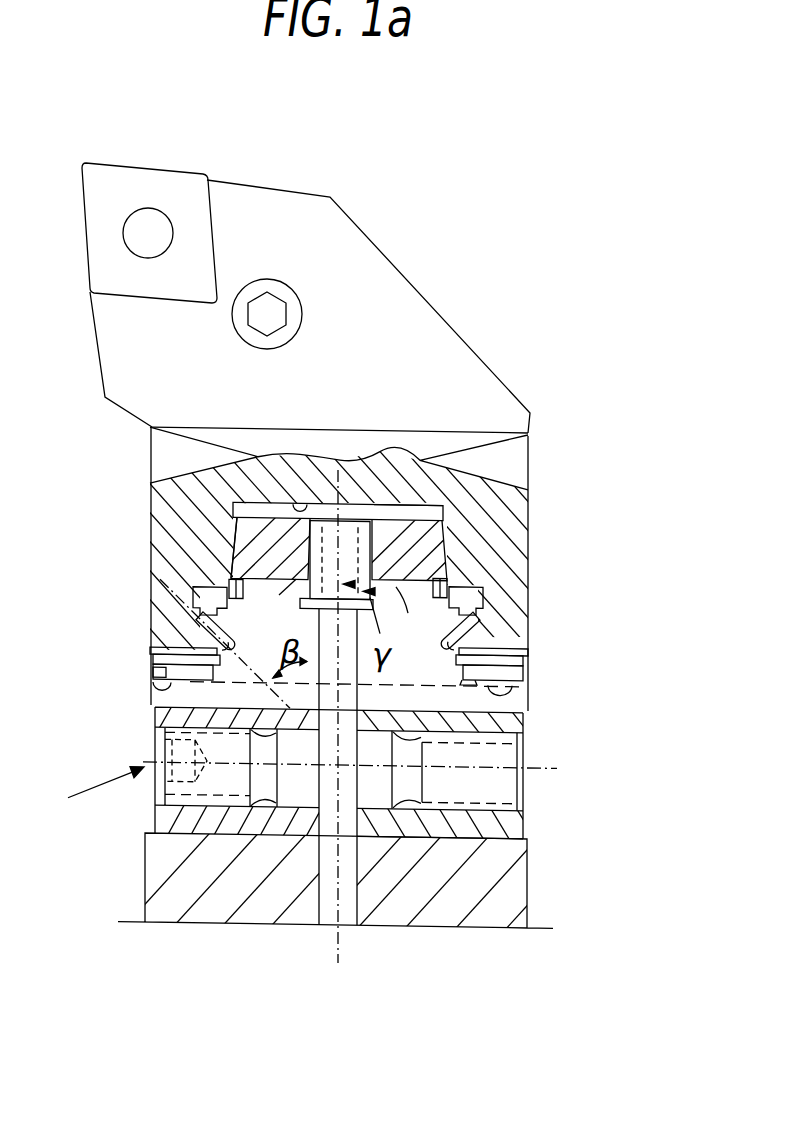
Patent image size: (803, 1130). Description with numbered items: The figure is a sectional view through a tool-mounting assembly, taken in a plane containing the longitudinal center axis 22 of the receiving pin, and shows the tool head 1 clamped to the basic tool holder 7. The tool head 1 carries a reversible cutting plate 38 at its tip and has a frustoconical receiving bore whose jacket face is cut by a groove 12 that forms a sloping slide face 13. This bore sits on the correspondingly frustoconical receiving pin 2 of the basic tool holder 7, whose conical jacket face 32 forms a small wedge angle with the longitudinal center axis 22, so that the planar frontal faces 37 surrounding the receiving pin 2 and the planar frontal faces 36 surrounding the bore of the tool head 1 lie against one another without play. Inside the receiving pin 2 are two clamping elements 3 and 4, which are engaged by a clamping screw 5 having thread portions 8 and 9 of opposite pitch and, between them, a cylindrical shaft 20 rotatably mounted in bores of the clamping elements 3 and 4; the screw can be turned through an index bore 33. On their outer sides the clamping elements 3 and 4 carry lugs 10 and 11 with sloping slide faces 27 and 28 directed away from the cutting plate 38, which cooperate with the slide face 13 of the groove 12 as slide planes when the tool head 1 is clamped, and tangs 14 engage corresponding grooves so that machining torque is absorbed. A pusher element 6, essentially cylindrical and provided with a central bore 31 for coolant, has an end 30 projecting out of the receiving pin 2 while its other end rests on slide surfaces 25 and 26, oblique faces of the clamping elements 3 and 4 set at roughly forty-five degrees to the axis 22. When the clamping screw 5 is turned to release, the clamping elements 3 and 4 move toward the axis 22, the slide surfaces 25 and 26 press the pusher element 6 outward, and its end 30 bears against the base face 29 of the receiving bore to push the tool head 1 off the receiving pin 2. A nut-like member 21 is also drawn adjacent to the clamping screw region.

The tool head 1 is at (362, 250).
The receiving pin 2 is at (430, 553).
The clamping element 3 is at (225, 643).
The clamping element 4 is at (430, 670).
The clamping screw 5 is at (94, 796).
The pusher element 6 is at (395, 527).
The basic tool holder 7 is at (158, 874).
The thread portion 8 is at (153, 829).
The thread portion 9 is at (493, 782).
The lug 10 is at (205, 605).
The lug 11 is at (482, 610).
The groove 12 is at (226, 592).
The sloping slide face 13 is at (187, 640).
The tang 14 is at (150, 714).
The cylindrical shaft 20 is at (300, 787).
The nut 21 is at (402, 727).
The longitudinal center axis 22 is at (340, 947).
The slide surface 25 is at (264, 608).
The slide surface 26 is at (420, 613).
The sloping slide face 27 is at (203, 619).
The sloping slide face 28 is at (490, 638).
The base face 29 is at (300, 500).
The end of pusher element 30 is at (355, 521).
The central bore 31 is at (324, 521).
The jacket face 32 is at (232, 539).
The index bore 33 is at (170, 788).
The planar frontal face 36 is at (160, 675).
The planar frontal face 37 is at (160, 690).
The reversible cutting plate 38 is at (148, 200).